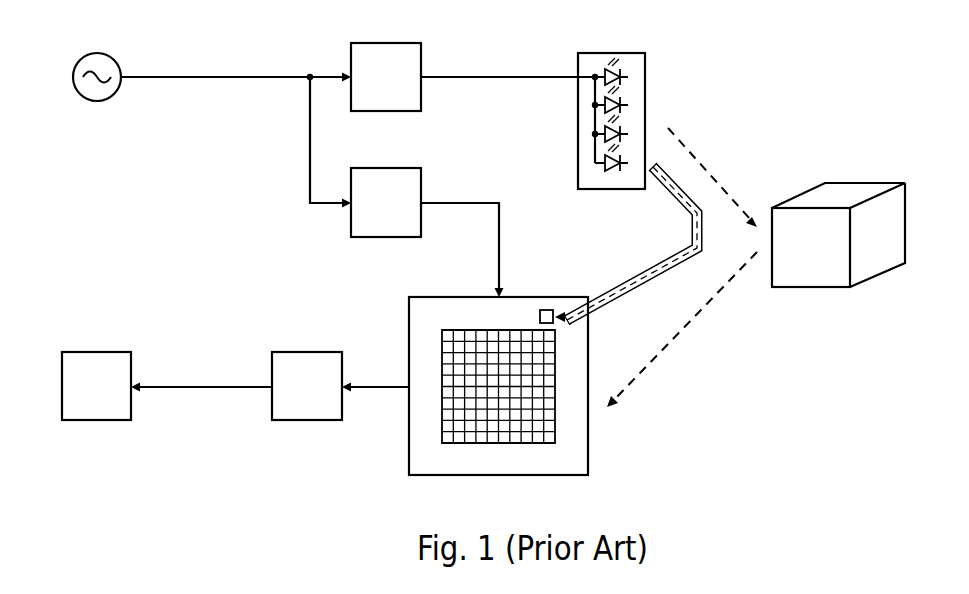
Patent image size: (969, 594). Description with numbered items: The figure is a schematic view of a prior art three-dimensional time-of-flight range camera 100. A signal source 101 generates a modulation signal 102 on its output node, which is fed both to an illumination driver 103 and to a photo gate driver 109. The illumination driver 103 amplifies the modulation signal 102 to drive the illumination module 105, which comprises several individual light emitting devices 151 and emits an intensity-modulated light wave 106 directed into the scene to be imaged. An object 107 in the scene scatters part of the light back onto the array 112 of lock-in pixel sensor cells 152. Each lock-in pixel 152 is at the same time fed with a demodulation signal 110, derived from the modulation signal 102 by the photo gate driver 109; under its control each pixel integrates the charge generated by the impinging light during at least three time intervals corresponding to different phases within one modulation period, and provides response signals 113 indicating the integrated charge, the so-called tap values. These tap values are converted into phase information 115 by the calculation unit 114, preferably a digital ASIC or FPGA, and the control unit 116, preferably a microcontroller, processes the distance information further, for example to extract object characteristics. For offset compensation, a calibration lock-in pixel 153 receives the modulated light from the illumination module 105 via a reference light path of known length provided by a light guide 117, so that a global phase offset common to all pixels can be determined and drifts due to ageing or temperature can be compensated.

The range camera 100 is at (686, 50).
The signal source 101 is at (98, 54).
The modulation signal 102 is at (196, 80).
The illumination driver 103 is at (421, 97).
The illumination module 105 is at (577, 141).
The intensity-modulated light wave 106 is at (710, 172).
The object 107 is at (803, 288).
The photo gate driver 109 is at (421, 183).
The demodulation signal 110 is at (499, 225).
The array of lock-in pixel sensor cells 112 is at (532, 384).
The response signals 113 is at (368, 386).
The calculation unit 114 is at (305, 351).
The phase information 115 is at (188, 386).
The control unit 116 is at (92, 351).
The light guide 117 is at (632, 287).
The light emitting devices 151 is at (614, 171).
The lock-in pixel sensor cells 152 is at (448, 443).
The calibration lock-in pixel 153 is at (548, 310).